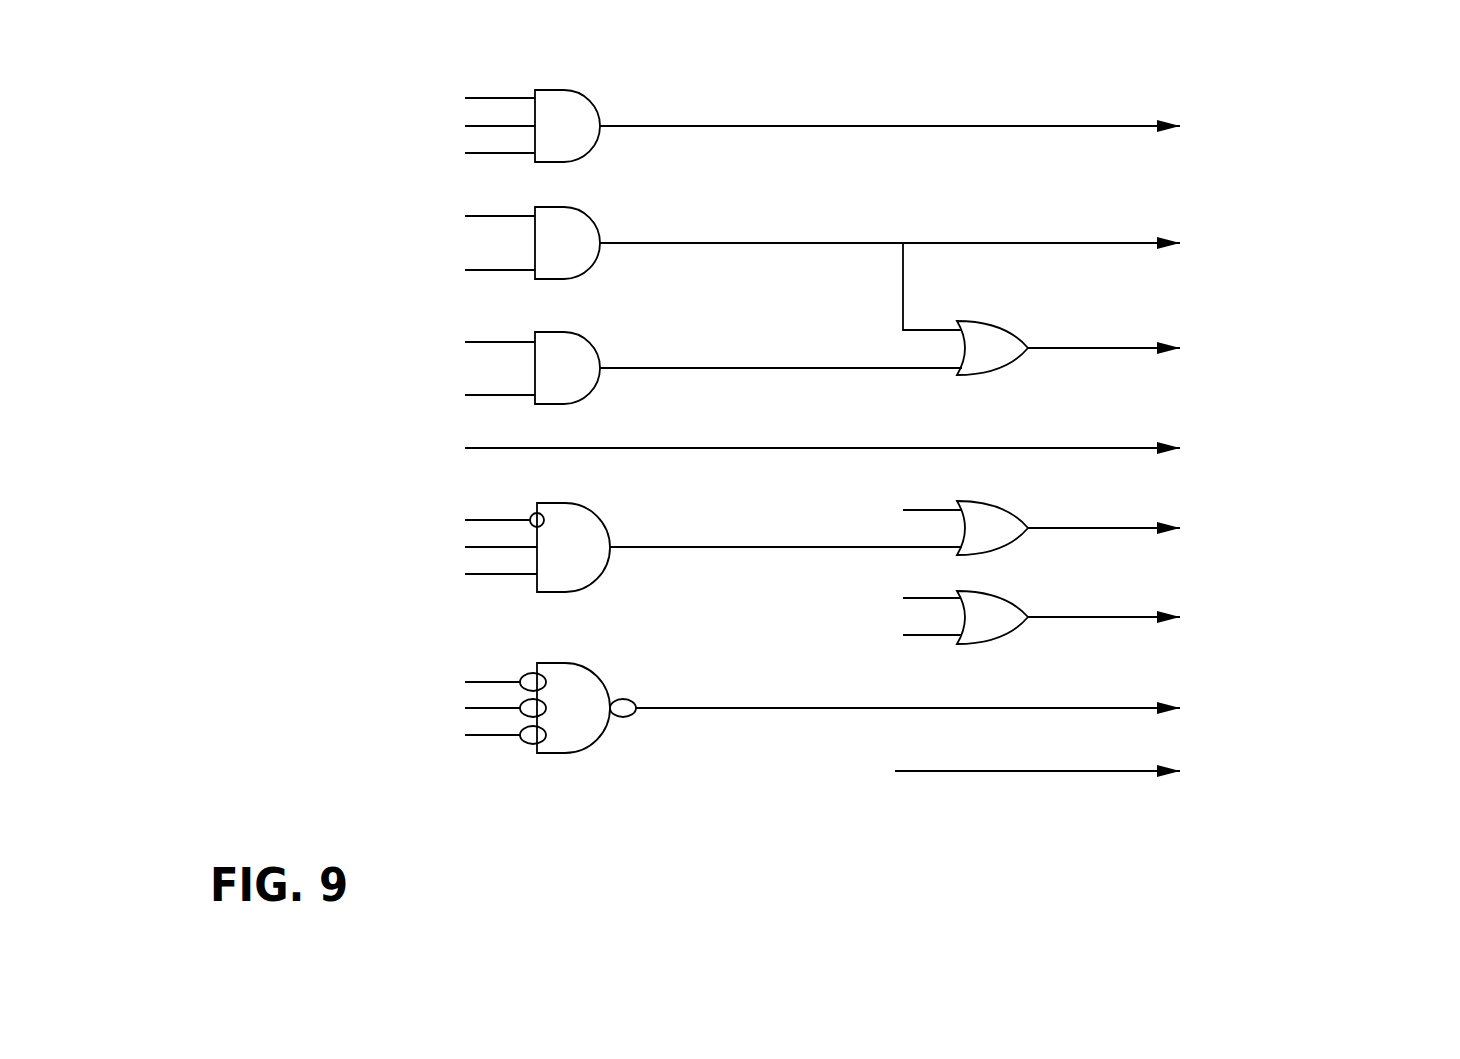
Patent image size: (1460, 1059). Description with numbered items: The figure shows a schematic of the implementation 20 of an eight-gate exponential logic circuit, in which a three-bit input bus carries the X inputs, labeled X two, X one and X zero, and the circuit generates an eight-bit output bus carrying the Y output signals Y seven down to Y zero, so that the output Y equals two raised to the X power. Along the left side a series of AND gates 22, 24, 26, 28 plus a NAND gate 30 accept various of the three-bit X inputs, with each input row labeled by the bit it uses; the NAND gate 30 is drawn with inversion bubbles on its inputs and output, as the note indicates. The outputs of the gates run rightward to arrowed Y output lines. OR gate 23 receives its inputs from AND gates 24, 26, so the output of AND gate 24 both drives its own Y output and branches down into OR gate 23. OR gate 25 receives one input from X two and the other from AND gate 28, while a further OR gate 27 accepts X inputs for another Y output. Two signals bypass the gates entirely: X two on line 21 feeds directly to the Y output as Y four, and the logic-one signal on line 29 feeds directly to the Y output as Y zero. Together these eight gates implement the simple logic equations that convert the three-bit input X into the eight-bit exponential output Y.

The implementation 20 is at (733, 82).
The line 21 is at (725, 448).
The AND gate 22 is at (583, 103).
The OR gate 23 is at (997, 327).
The AND gate 24 is at (583, 222).
The OR gate 25 is at (1008, 507).
The AND gate 26 is at (585, 333).
The OR gate 27 is at (1013, 598).
The AND gate 28 is at (596, 517).
The line 29 is at (965, 771).
The NAND gate 30 is at (597, 672).